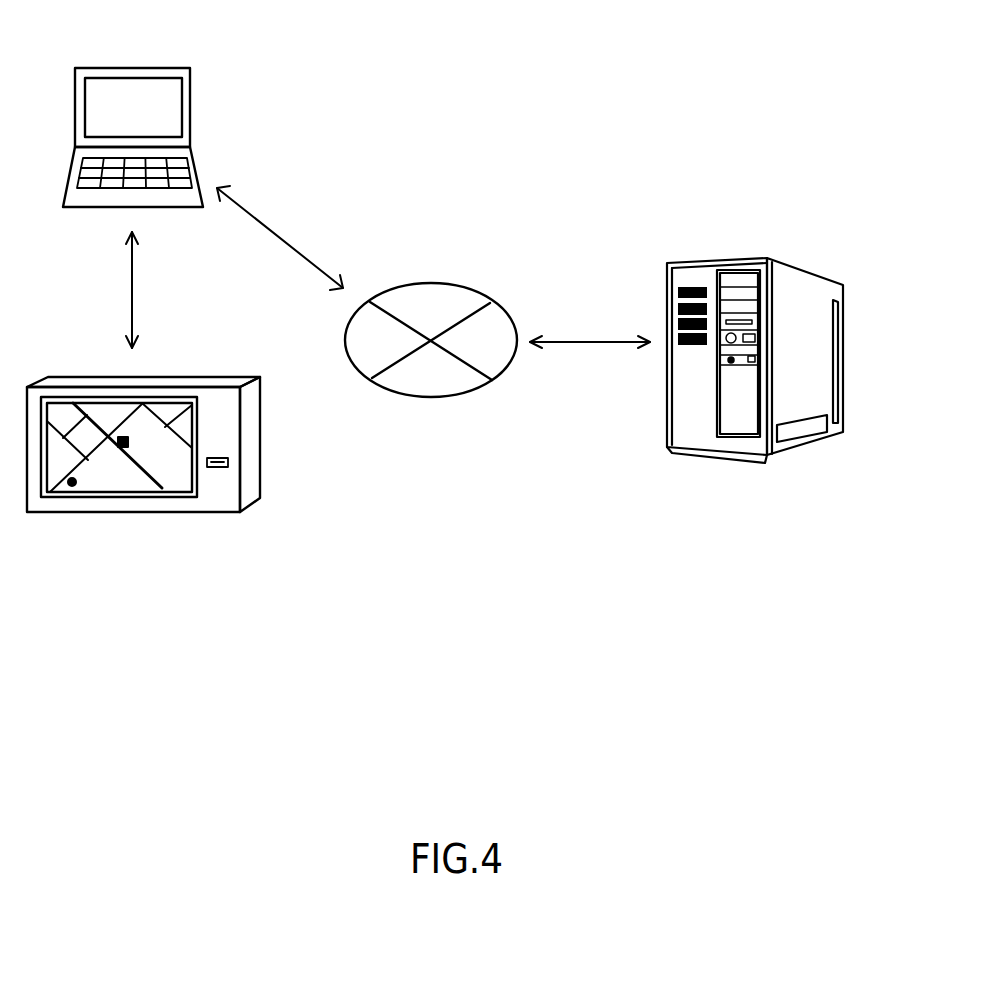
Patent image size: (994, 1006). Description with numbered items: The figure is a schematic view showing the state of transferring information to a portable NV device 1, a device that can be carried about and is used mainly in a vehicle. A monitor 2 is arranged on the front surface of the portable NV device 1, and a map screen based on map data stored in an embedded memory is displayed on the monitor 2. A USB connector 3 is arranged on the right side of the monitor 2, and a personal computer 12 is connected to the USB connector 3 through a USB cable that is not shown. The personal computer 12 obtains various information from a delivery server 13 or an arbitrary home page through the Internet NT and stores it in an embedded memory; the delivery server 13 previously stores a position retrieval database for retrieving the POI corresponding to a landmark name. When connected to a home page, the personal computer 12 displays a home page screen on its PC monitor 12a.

The personal computer 12 is at (192, 71).
The PC monitor 12a is at (176, 106).
The Internet NT is at (433, 283).
The portable NV device 1 is at (260, 440).
The monitor 2 is at (177, 482).
The USB connector 3 is at (229, 463).
The delivery server 13 is at (767, 457).